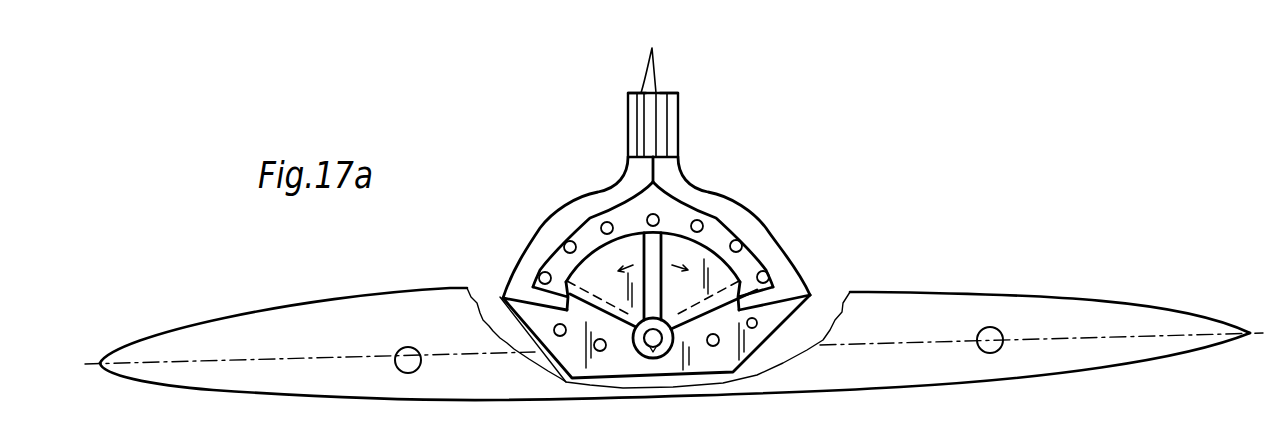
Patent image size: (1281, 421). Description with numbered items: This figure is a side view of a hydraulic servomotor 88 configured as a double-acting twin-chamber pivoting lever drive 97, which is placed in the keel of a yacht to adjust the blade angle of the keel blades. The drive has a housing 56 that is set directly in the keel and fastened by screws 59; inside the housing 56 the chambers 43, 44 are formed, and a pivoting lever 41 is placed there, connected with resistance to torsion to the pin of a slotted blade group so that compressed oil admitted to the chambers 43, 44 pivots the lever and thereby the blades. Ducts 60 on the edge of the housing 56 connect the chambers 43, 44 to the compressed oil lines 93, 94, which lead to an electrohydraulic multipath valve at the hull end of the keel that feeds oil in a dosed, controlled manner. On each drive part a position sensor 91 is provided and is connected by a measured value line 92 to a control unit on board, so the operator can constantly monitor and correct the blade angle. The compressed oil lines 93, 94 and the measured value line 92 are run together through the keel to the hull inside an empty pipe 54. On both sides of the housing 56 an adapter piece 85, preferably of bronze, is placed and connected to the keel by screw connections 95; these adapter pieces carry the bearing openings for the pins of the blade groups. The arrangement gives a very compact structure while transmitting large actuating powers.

The pivoting lever 41 is at (756, 326).
The chamber 43 is at (597, 272).
The chamber 44 is at (718, 277).
The empty pipe 54 is at (678, 128).
The housing 56 is at (500, 297).
The screws 59 is at (700, 224).
The ducts 60 is at (580, 210).
The adapter piece 85 is at (198, 330).
The hydraulic servomotor 88 is at (875, 117).
The position sensor 91 is at (653, 354).
The measured value line 92 is at (651, 55).
The compressed oil line 93 is at (633, 92).
The compressed oil line 94 is at (670, 92).
The screw connections 95 is at (397, 351).
The twin-chamber pivoting lever drive 97 is at (540, 176).